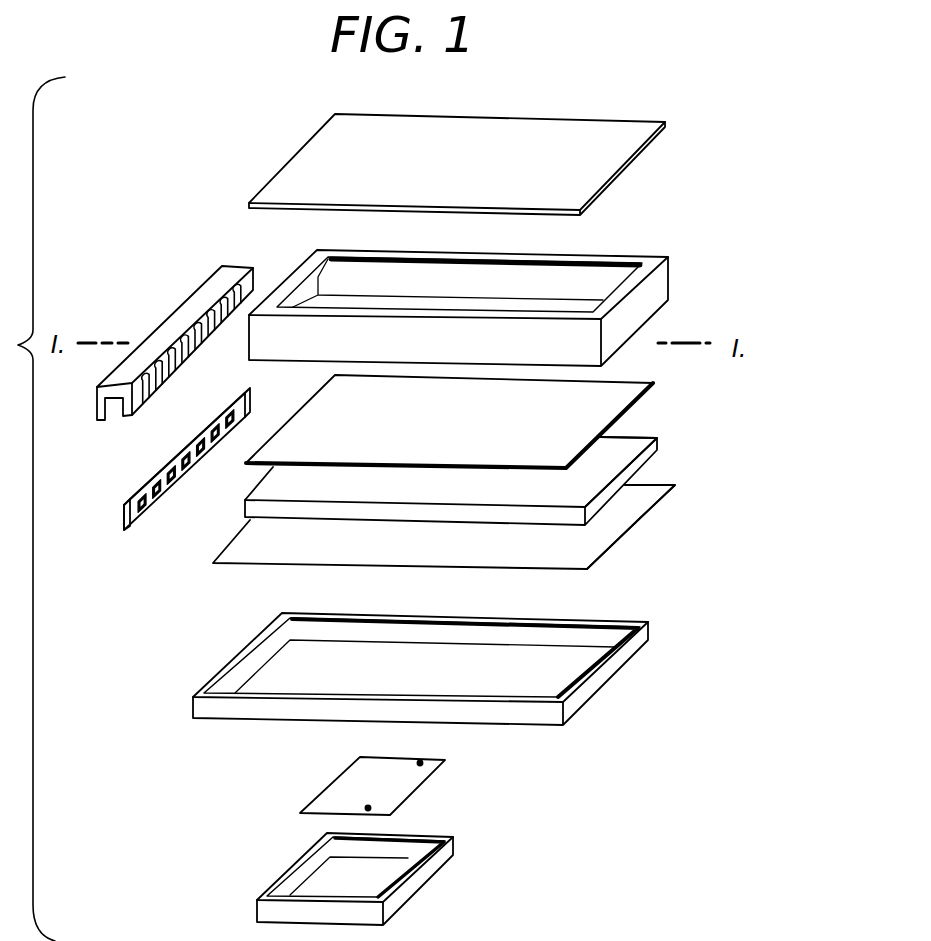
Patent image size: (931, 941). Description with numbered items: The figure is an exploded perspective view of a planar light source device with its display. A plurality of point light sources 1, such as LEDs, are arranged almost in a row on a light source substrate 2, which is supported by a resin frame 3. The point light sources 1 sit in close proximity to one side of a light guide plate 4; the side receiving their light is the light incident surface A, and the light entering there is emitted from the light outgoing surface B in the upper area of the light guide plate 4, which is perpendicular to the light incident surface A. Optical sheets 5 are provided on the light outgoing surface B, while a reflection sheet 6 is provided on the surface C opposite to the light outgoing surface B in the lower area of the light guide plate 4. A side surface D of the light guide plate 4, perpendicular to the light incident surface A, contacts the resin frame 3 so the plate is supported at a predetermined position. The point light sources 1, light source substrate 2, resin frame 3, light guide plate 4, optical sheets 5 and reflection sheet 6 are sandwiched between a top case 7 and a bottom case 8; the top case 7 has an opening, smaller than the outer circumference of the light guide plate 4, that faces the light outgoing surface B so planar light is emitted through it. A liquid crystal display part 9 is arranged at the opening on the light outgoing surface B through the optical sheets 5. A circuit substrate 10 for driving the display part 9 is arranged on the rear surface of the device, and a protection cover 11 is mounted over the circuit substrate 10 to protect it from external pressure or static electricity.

The point light source 1 is at (147, 510).
The light source substrate 2 is at (120, 523).
The resin frame 3 is at (220, 280).
The light guide plate 4 is at (650, 452).
The optical sheets 5 is at (618, 385).
The reflection sheet 6 is at (232, 552).
The top case 7 is at (653, 257).
The bottom case 8 is at (648, 635).
The display part 9 is at (635, 128).
The circuit substrate 10 is at (437, 758).
The protection cover 11 is at (267, 910).
The light incident surface A is at (170, 460).
The light outgoing surface B is at (626, 443).
The surface opposite to the light outgoing surface C is at (627, 492).
The side surface D is at (597, 513).